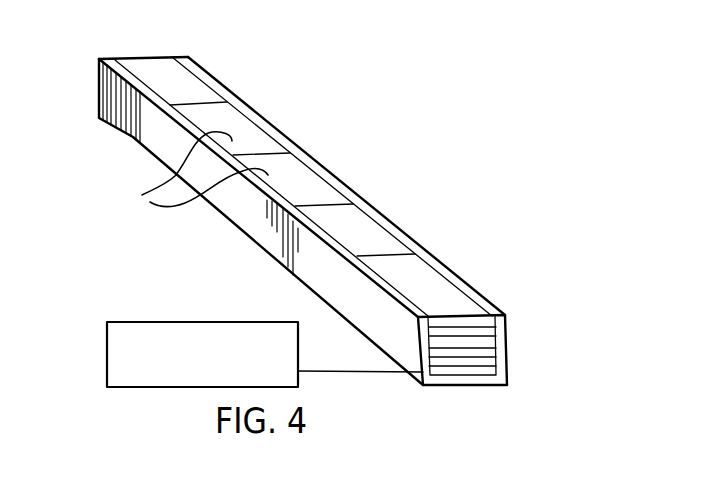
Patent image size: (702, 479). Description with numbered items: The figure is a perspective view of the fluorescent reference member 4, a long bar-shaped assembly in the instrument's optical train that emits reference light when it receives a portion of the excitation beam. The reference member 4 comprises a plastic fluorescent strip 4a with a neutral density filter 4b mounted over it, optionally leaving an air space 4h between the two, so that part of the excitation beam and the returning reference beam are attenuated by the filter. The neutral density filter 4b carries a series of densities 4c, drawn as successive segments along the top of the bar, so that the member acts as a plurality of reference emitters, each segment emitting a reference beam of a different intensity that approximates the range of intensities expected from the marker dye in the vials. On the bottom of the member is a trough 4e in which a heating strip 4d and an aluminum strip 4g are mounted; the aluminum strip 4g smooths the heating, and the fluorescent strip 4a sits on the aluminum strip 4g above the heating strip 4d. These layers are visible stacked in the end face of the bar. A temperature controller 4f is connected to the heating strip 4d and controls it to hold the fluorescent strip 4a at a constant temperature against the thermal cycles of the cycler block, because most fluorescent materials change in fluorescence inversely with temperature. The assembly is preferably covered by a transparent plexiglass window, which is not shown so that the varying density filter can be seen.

The fluorescent reference member 4 is at (360, 171).
The plastic fluorescent strip 4a is at (442, 338).
The neutral density filter 4b is at (276, 125).
The series of densities 4c is at (188, 172).
The heating strip 4d is at (487, 370).
The trough 4e is at (256, 227).
The temperature controller 4f is at (167, 313).
The aluminum strip 4g is at (487, 360).
The air space 4h is at (487, 333).